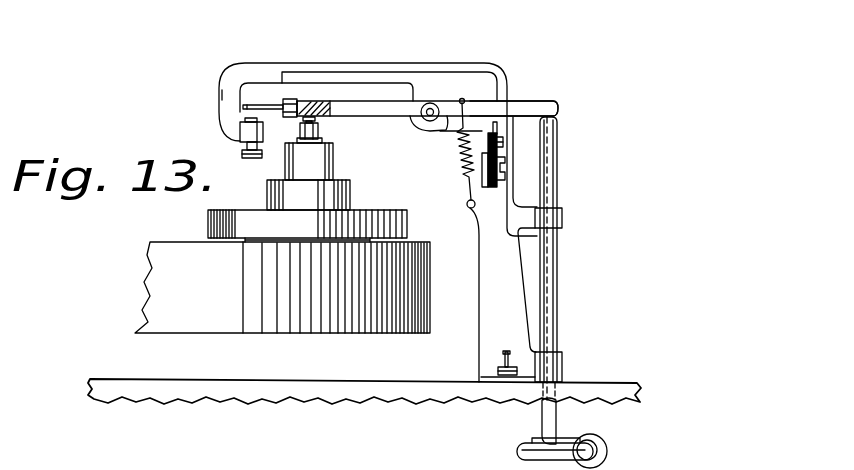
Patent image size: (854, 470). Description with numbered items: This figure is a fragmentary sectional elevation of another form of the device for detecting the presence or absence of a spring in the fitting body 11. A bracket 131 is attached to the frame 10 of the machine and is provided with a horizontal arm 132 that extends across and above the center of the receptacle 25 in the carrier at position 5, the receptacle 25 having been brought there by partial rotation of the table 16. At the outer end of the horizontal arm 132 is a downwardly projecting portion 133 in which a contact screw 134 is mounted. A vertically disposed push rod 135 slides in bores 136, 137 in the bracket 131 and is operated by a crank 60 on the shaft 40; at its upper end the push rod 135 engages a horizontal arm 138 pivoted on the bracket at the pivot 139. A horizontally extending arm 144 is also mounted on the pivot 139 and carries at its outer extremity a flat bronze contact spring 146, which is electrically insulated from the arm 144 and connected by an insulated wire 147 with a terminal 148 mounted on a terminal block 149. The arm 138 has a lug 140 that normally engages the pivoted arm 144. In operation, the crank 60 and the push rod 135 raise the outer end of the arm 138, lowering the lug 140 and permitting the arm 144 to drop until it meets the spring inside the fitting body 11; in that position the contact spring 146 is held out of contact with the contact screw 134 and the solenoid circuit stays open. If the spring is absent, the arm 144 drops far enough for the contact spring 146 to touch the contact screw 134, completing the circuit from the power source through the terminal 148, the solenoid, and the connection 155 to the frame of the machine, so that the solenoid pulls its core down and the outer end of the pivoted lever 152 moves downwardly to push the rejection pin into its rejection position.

The position 5 is at (208, 222).
The frame 10 is at (608, 382).
The fitting body 11 is at (318, 133).
The table 16 is at (377, 325).
The receptacle 25 is at (333, 160).
The shaft 40 is at (517, 446).
The crank 60 is at (567, 441).
The bracket 131 is at (479, 272).
The horizontal arm 132 is at (344, 63).
The downwardly projecting portion 133 is at (217, 112).
The contact screw 134 is at (243, 146).
The push rod 135 is at (557, 302).
The bore 136 is at (560, 366).
The bore 137 is at (564, 222).
The horizontal arm 138 is at (533, 101).
The pivot 139 is at (430, 121).
The lug 140 is at (411, 124).
The horizontally extending arm 144 is at (378, 100).
The contact spring 146 is at (264, 100).
The insulated wire 147 is at (293, 72).
The terminal 148 is at (500, 148).
The terminal block 149 is at (492, 188).
The pivoted lever 152 is at (359, 468).
The connection 155 is at (498, 372).